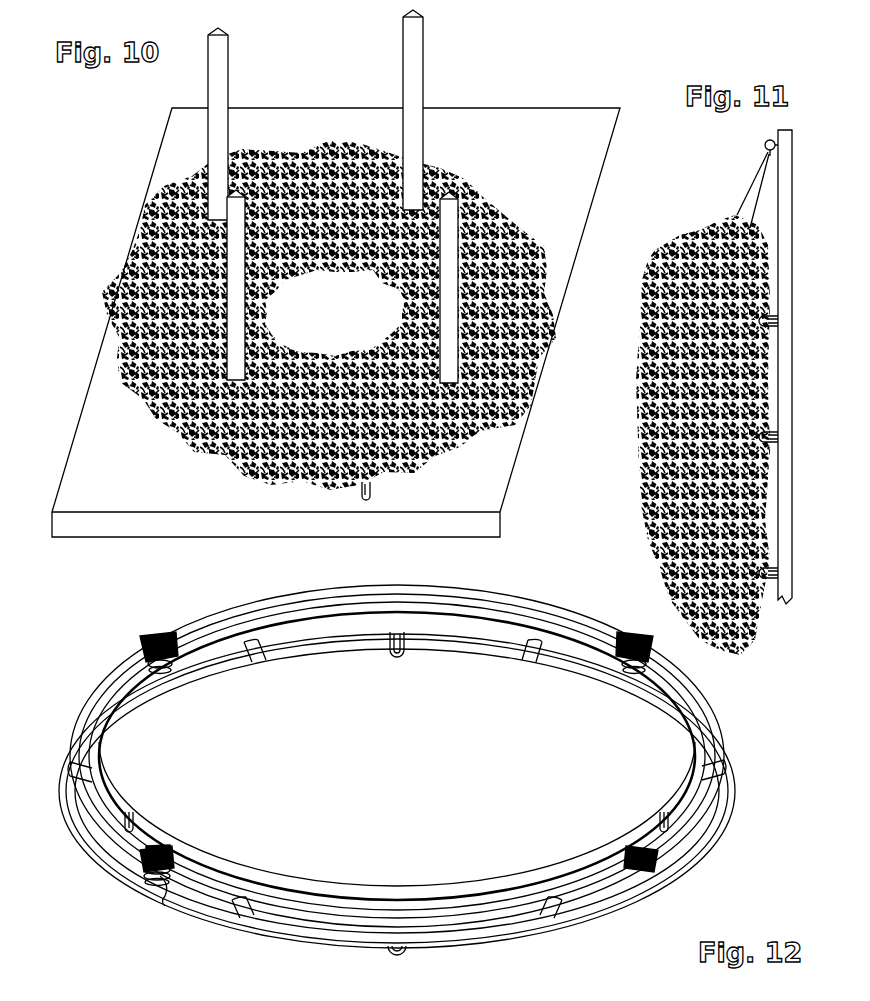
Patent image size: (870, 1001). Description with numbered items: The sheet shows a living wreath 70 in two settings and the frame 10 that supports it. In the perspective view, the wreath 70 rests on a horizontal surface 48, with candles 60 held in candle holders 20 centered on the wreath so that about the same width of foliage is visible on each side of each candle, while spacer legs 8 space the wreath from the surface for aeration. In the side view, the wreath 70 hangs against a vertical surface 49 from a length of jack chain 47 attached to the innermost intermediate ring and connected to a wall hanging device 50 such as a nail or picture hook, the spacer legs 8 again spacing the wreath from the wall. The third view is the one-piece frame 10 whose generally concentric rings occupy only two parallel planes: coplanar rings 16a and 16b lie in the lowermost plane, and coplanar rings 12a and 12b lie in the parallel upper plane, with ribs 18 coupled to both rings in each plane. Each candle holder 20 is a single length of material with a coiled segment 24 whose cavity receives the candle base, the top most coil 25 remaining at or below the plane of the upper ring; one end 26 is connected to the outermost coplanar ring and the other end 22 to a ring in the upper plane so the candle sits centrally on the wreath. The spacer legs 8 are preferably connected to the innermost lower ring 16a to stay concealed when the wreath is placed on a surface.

In FIG. 10, the spacer legs 8 is at (371, 497).
In FIG. 11, the spacer legs 8 is at (780, 313).
In FIG. 12, the spacer legs 8 is at (400, 660).
In FIG. 12, the frame 10 is at (78, 698).
In FIG. 12, the concentric ring 12a is at (322, 614).
In FIG. 12, the concentric ring 12b is at (305, 593).
In FIG. 12, the innermost ring 16a is at (655, 738).
In FIG. 12, the concentric ring 16b is at (722, 808).
In FIG. 12, the ribs 18 is at (76, 762).
In FIG. 12, the candle holders 20 is at (140, 642).
In FIG. 12, the end 22 is at (168, 846).
In FIG. 12, the coiled segment 24 is at (150, 880).
In FIG. 12, the top most coil 25 is at (146, 868).
In FIG. 12, the end 26 is at (168, 880).
In FIG. 11, the jack chain 47 is at (755, 180).
In FIG. 10, the horizontal surface 48 is at (577, 176).
In FIG. 11, the vertical surface 49 is at (790, 196).
In FIG. 11, the wall hanging device 50 is at (762, 147).
In FIG. 10, the candles 60 is at (218, 63).
In FIG. 10, the wreath 70 is at (135, 262).
In FIG. 11, the wreath 70 is at (643, 456).